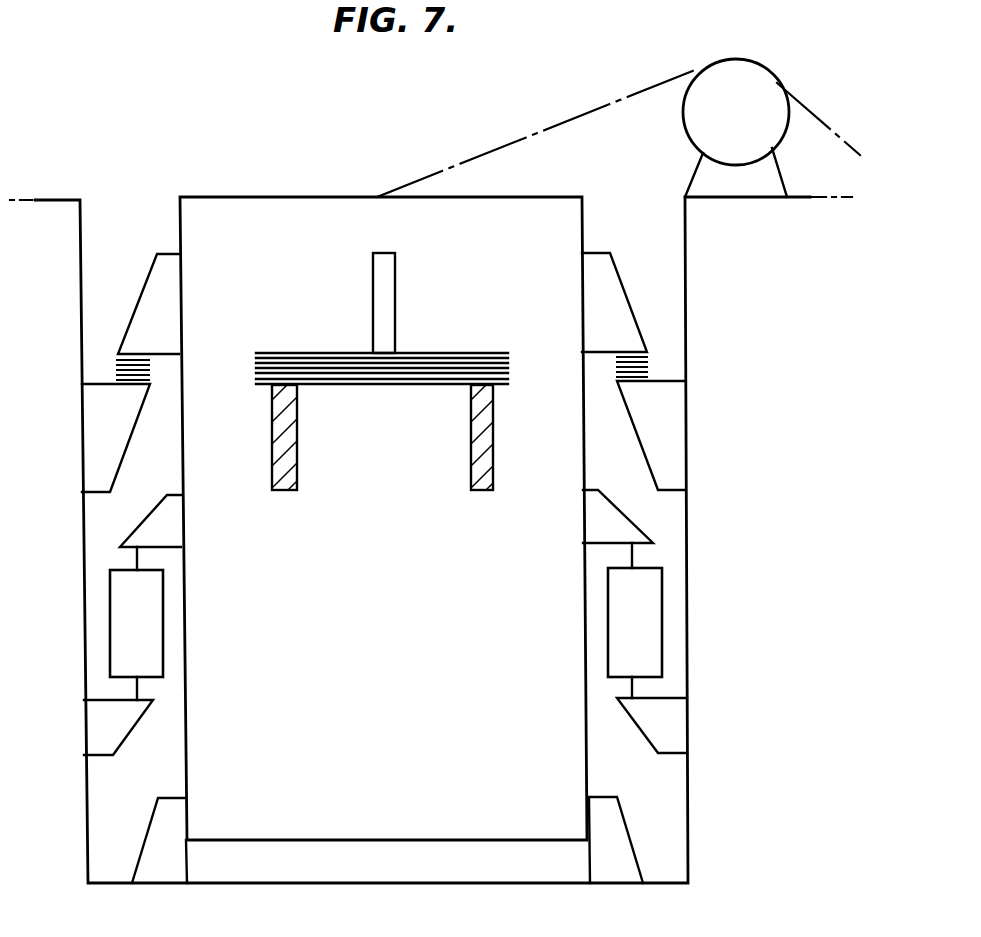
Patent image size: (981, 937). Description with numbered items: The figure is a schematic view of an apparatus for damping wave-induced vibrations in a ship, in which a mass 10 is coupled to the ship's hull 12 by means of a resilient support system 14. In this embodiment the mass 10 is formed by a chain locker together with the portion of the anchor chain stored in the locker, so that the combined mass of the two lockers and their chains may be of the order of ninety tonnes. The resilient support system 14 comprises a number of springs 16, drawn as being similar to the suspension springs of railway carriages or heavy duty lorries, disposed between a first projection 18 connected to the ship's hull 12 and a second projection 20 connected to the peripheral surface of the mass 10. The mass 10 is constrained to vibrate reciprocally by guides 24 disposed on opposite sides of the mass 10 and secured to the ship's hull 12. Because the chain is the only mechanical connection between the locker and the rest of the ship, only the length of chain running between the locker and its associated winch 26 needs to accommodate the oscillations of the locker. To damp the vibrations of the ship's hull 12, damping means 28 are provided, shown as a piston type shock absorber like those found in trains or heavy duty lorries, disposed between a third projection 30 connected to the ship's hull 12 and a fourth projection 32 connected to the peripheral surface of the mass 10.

The mass 10 is at (385, 592).
The ship's hull 12 is at (43, 435).
The resilient support system 14 is at (650, 368).
The springs 16 is at (648, 355).
The first projection 18 is at (672, 432).
The second projection 20 is at (604, 262).
The guides 24 is at (150, 873).
The winch 26 is at (710, 85).
The damping means 28 is at (109, 615).
The third projection 30 is at (100, 728).
The fourth projection 32 is at (165, 495).